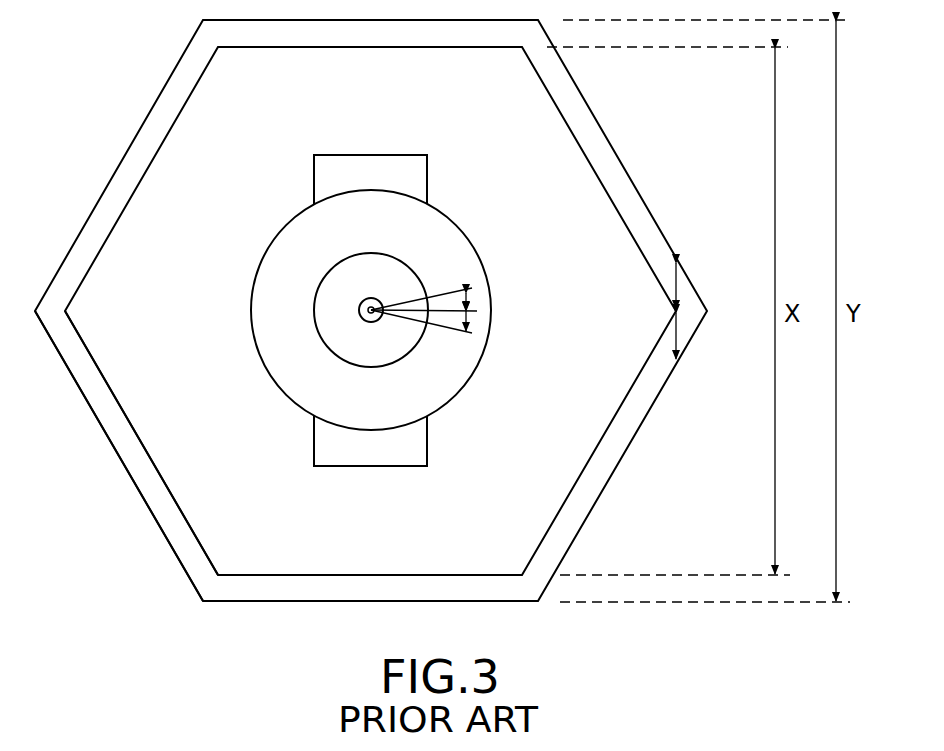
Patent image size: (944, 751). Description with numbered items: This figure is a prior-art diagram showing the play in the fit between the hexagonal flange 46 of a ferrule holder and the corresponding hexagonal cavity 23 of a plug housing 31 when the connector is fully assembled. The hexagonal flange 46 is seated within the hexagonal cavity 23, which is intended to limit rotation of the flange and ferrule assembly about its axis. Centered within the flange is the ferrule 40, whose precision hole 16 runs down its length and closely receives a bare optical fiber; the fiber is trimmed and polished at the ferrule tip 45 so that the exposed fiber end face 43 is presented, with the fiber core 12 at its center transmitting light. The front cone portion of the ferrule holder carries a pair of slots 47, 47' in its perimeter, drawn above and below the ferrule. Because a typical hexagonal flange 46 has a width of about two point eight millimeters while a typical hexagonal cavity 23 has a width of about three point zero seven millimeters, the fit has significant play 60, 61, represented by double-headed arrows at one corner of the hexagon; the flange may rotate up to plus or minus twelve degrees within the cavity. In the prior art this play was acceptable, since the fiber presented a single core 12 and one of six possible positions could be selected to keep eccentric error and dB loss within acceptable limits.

The plug housing 31 is at (115, 128).
The hexagonal flange 46 is at (130, 420).
The hexagonal cavity 23 is at (138, 482).
The ferrule 40 is at (251, 327).
The ferrule tip 45 is at (325, 303).
The fiber core 12 is at (371, 298).
The shaft bore 16 is at (392, 322).
The exposed fiber end face 43 is at (353, 327).
The slot 47' is at (412, 179).
The slot 47 is at (410, 441).
The play 61 is at (678, 284).
The play 60 is at (680, 338).